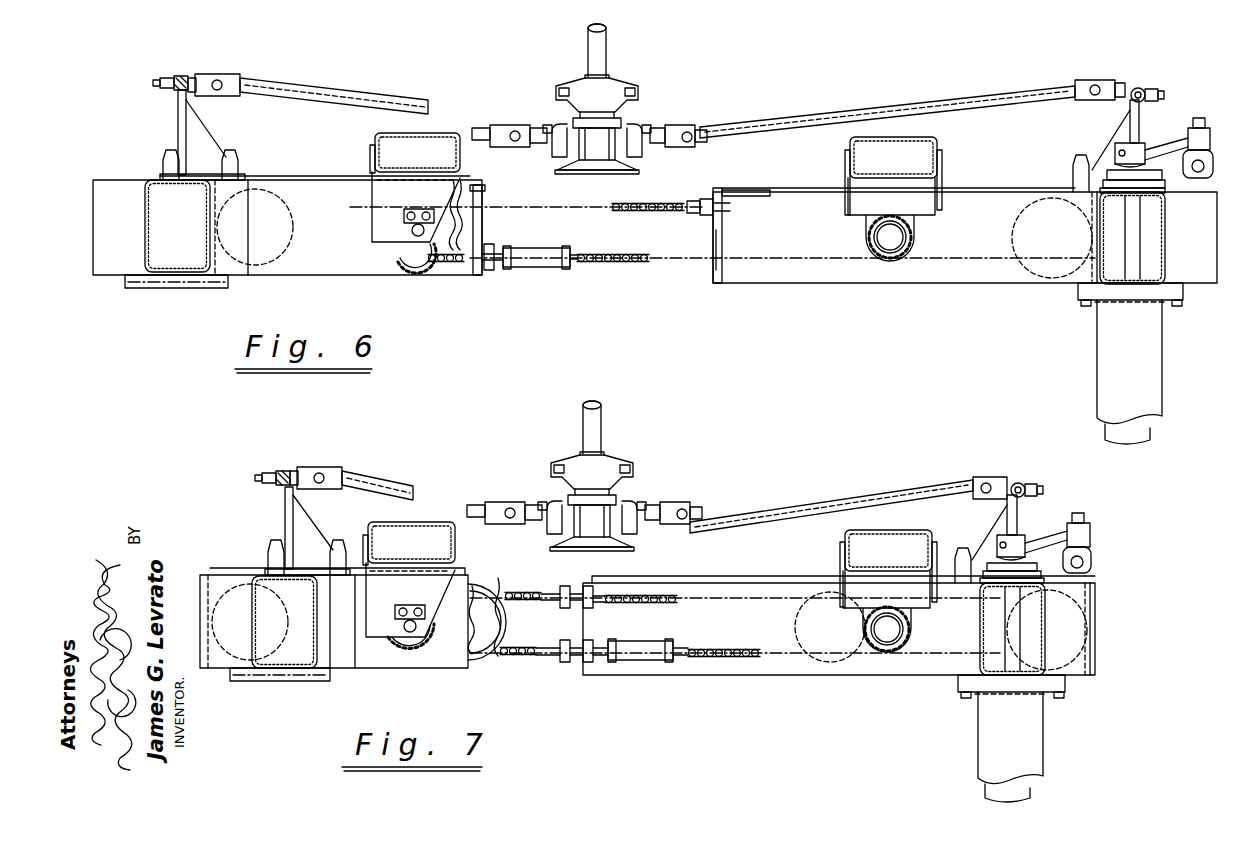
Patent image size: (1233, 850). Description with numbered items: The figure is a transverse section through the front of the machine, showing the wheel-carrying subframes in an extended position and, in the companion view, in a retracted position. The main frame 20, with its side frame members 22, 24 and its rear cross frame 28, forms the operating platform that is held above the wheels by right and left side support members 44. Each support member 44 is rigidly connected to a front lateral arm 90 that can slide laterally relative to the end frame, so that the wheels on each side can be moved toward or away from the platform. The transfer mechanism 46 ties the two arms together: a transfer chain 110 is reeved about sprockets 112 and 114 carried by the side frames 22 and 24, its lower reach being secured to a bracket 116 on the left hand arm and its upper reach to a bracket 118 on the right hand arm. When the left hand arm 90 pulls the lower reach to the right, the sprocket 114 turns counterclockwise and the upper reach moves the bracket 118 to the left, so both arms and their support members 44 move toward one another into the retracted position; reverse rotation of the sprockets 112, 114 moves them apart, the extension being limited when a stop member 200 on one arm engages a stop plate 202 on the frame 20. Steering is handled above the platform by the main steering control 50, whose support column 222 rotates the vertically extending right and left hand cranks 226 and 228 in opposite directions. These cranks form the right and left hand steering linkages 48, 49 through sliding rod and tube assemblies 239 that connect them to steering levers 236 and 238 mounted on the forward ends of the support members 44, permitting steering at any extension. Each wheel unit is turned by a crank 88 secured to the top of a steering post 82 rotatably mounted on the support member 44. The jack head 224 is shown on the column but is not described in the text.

In FIG. 6, the main frame 20 is at (425, 130).
In FIG. 7, the main frame 20 is at (425, 520).
In FIG. 6, the side frame member 22 is at (940, 136).
In FIG. 7, the side frame member 22 is at (925, 530).
In FIG. 6, the side frame member 24 is at (372, 130).
In FIG. 7, the side frame member 24 is at (370, 516).
In FIG. 6, the rear cross frame 28 is at (285, 175).
In FIG. 7, the rear cross frame 28 is at (235, 570).
In FIG. 6, the side support member 44 is at (142, 200).
In FIG. 7, the side support member 44 is at (1055, 623).
In FIG. 6, the transfer mechanism 46 is at (632, 268).
In FIG. 7, the transfer mechanism 46 is at (632, 663).
In FIG. 6, the right hand steering linkage 48 is at (1144, 80).
In FIG. 7, the right hand steering linkage 48 is at (1042, 487).
In FIG. 6, the left hand steering linkage 49 is at (162, 72).
In FIG. 6, the main steering control 50 is at (589, 94).
In FIG. 7, the main steering control 50 is at (584, 475).
In FIG. 6, the steering post 82 is at (1135, 265).
In FIG. 7, the steering post 82 is at (1005, 645).
In FIG. 6, the crank 88 is at (1168, 150).
In FIG. 7, the crank 88 is at (1048, 535).
In FIG. 6, the front lateral arm 90 is at (300, 278).
In FIG. 7, the front lateral arm 90 is at (428, 666).
In FIG. 6, the transfer chain 110 is at (645, 198).
In FIG. 6, the sprocket 112 is at (908, 257).
In FIG. 7, the sprocket 112 is at (882, 658).
In FIG. 6, the sprocket 114 is at (402, 247).
In FIG. 7, the sprocket 114 is at (412, 652).
In FIG. 6, the bracket 116 is at (484, 252).
In FIG. 6, the bracket 118 is at (726, 232).
In FIG. 6, the stop member 200 is at (726, 190).
In FIG. 6, the stop plate 202 is at (845, 165).
In FIG. 6, the support column 222 is at (592, 35).
In FIG. 7, the support column 222 is at (587, 412).
In FIG. 6, the jack head 224 is at (614, 58).
In FIG. 7, the jack head 224 is at (610, 446).
In FIG. 6, the right hand crank 226 is at (668, 150).
In FIG. 7, the right hand crank 226 is at (658, 540).
In FIG. 6, the left hand crank 228 is at (548, 150).
In FIG. 7, the left hand crank 228 is at (546, 540).
In FIG. 6, the steering lever 236 is at (1138, 125).
In FIG. 6, the steering lever 238 is at (178, 126).
In FIG. 6, the sliding rod and tube assembly 239 is at (288, 95).
In FIG. 7, the sliding rod and tube assembly 239 is at (375, 472).